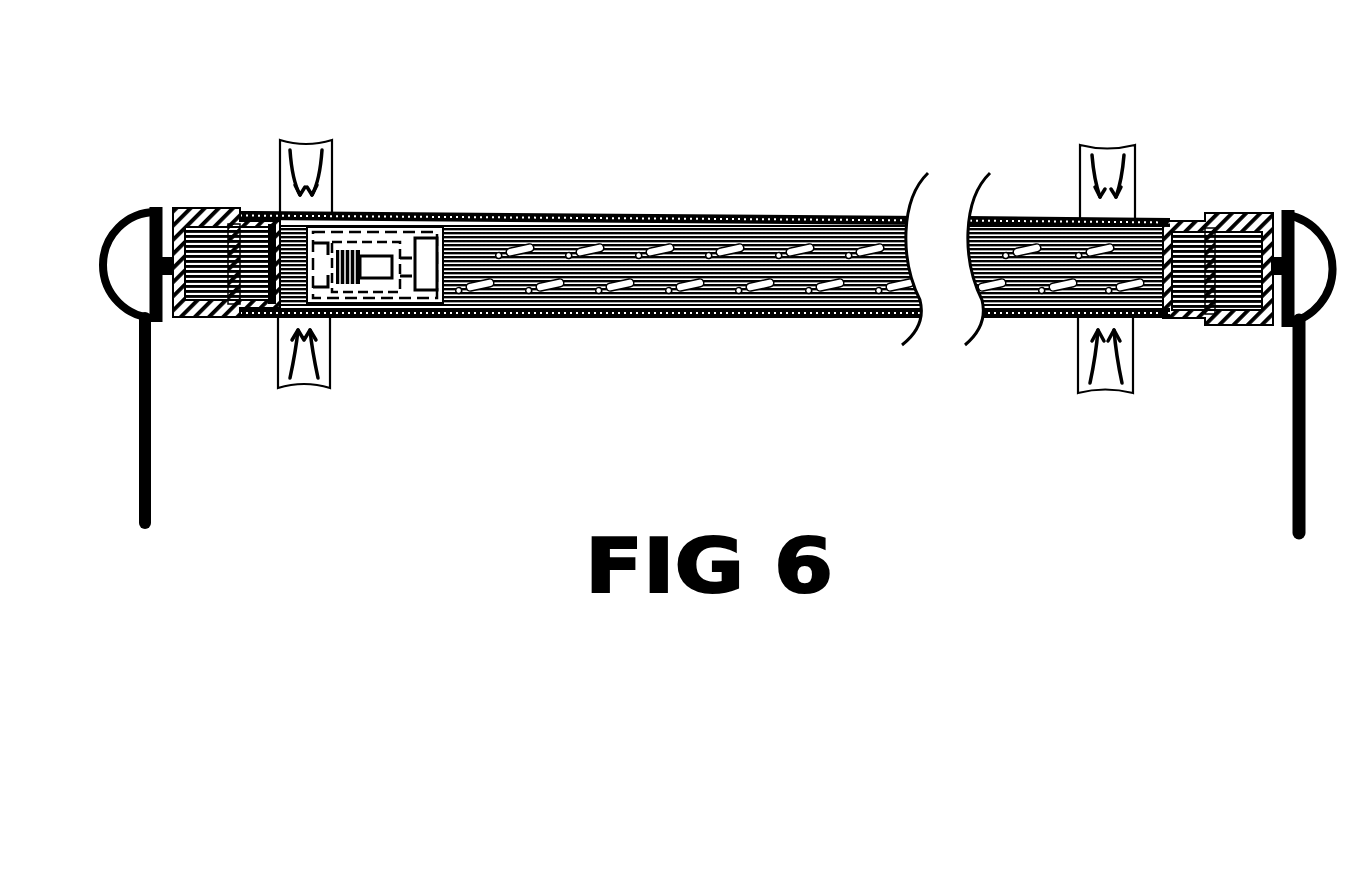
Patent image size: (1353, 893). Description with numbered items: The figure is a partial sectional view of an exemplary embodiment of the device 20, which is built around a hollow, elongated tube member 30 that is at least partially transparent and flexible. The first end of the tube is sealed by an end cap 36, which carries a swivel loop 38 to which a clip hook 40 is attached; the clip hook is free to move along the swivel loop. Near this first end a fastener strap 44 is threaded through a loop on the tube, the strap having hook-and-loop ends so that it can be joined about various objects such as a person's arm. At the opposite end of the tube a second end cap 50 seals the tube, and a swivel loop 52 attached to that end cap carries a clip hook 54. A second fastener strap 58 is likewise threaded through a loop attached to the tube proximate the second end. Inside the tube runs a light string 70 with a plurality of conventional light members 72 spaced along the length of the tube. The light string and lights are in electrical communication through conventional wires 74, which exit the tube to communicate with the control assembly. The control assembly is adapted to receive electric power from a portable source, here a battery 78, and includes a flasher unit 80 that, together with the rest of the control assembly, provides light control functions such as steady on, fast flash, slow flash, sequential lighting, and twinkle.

The device 20 is at (696, 281).
The elongated tube member 30 is at (883, 214).
The end cap 36 is at (226, 280).
The swivel loop 38 is at (100, 245).
The clip hook 40 is at (152, 490).
The fastener strap 44 is at (330, 150).
The second end cap 50 is at (1185, 325).
The swivel loop 52 is at (1317, 213).
The clip hook 54 is at (1292, 485).
The fastener strap 58 is at (1088, 186).
The light string 70 is at (862, 280).
The light members 72 is at (768, 318).
The wires 74 is at (278, 343).
The battery 78 is at (409, 260).
The flasher unit 80 is at (427, 212).